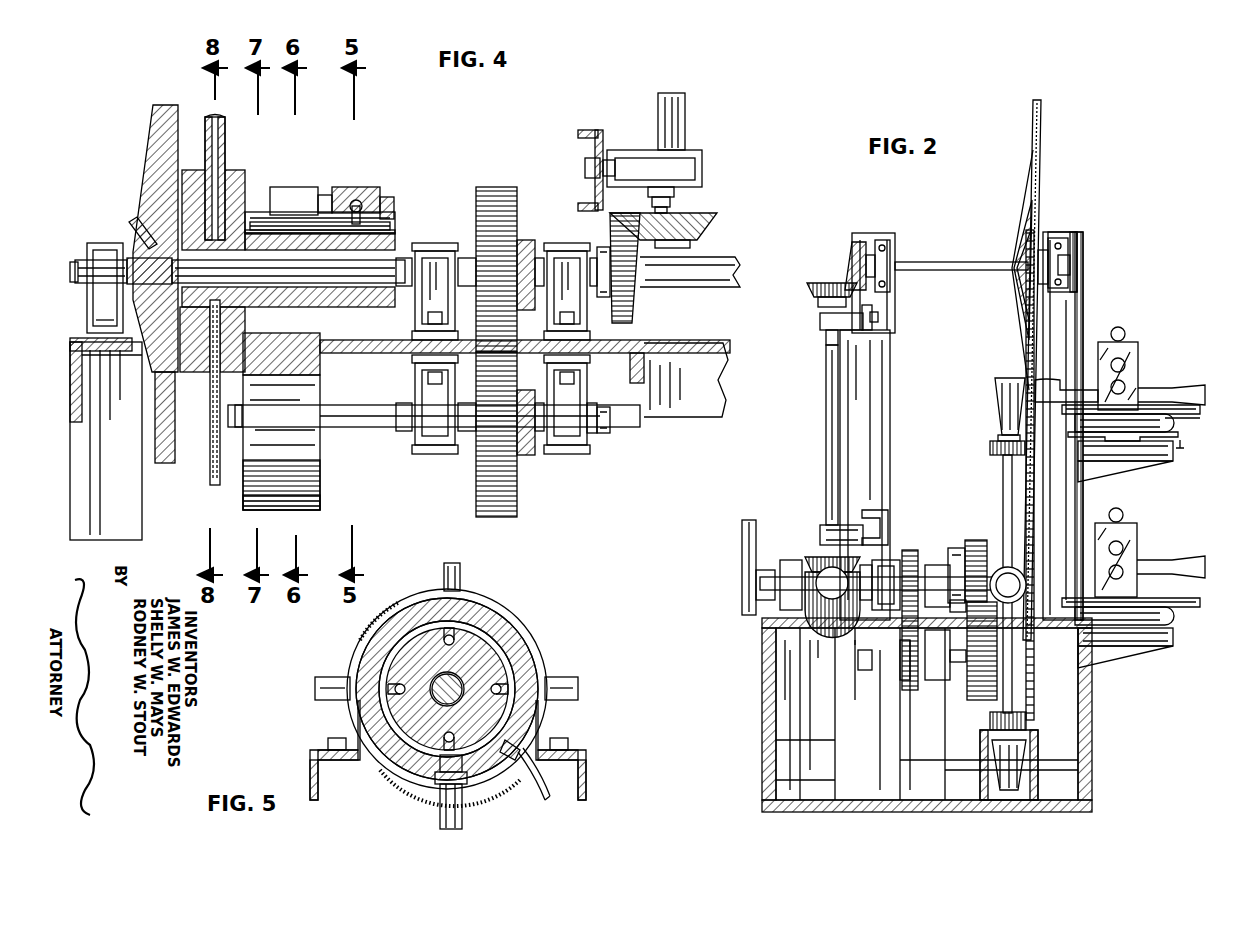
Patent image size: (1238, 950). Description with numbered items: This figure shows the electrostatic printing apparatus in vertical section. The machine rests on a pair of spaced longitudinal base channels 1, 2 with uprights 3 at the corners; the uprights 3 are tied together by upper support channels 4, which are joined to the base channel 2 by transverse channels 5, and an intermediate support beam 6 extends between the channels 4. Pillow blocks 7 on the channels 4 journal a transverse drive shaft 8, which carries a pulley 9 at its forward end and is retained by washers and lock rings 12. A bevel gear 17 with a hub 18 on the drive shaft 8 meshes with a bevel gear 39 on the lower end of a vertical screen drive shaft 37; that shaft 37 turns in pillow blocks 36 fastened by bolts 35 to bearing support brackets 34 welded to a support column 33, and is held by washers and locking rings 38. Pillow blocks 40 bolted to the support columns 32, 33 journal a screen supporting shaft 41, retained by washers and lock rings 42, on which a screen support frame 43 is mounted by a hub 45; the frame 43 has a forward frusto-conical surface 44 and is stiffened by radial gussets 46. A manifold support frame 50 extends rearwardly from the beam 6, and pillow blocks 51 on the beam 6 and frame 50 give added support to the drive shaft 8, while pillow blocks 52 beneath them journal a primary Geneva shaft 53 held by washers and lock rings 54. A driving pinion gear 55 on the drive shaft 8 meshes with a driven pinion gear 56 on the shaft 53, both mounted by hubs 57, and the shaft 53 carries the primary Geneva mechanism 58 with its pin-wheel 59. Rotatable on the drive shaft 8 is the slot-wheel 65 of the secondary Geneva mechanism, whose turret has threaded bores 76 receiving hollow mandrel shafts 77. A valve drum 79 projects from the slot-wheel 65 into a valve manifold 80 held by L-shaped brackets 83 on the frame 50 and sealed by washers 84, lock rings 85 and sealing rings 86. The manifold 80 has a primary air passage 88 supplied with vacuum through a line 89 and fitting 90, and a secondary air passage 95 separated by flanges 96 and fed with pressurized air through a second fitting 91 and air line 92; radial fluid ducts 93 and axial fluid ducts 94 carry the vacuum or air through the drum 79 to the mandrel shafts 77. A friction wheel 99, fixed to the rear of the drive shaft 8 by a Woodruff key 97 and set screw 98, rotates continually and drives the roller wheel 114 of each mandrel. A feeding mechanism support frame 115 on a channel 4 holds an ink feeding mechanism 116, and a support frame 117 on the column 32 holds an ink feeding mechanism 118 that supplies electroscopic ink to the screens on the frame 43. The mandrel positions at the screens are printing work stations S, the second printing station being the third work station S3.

In FIG. 2, the base channel 1 is at (1092, 806).
In FIG. 2, the base channel 2 is at (763, 790).
In FIG. 2, the upright 3 is at (1100, 698).
In FIG. 4, the support channel 4 is at (142, 515).
In FIG. 2, the transverse channel 5 is at (816, 645).
In FIG. 4, the intermediate support beam 6 is at (650, 340).
In FIG. 2, the intermediate support beam 6 is at (855, 630).
In FIG. 4, the pillow block 7 is at (117, 243).
In FIG. 4, the drive shaft 8 is at (738, 260).
In FIG. 2, the pulley 9 is at (744, 530).
In FIG. 4, the washers and lock rings 12 is at (75, 268).
In FIG. 2, the washers and lock rings 12 is at (770, 570).
In FIG. 4, the bevel gear 17 is at (636, 302).
In FIG. 2, the bevel gear 17 is at (866, 565).
In FIG. 4, the hub 18 is at (597, 247).
In FIG. 2, the hub 18 is at (890, 560).
In FIG. 2, the support column 32 is at (1083, 300).
In FIG. 2, the support column 33 is at (873, 233).
In FIG. 4, the bearing support bracket 34 is at (580, 128).
In FIG. 2, the bearing support bracket 34 is at (912, 498).
In FIG. 4, the bolt 35 is at (618, 160).
In FIG. 2, the bolt 35 is at (878, 318).
In FIG. 4, the pillow block 36 is at (700, 170).
In FIG. 2, the pillow block 36 is at (820, 525).
In FIG. 4, the screen drive shaft 37 is at (685, 105).
In FIG. 2, the screen drive shaft 37 is at (826, 442).
In FIG. 4, the washers and locking rings 38 is at (690, 148).
In FIG. 2, the washers and locking rings 38 is at (826, 340).
In FIG. 4, the bevel gear 39 is at (712, 218).
In FIG. 2, the bevel gear 39 is at (816, 557).
In FIG. 2, the pillow block 40 is at (1095, 262).
In FIG. 2, the screen supporting shaft 41 is at (972, 265).
In FIG. 2, the washers and lock rings 42 is at (1078, 255).
In FIG. 2, the screen support frame 43 is at (1043, 158).
In FIG. 2, the frusto-conical surface 44 is at (1032, 150).
In FIG. 2, the hub 45 is at (1040, 258).
In FIG. 2, the gusset 46 is at (1022, 210).
In FIG. 2, the manifold support frame 50 is at (958, 662).
In FIG. 4, the pillow block 51 is at (560, 243).
In FIG. 2, the pillow block 51 is at (928, 565).
In FIG. 4, the pillow block 52 is at (580, 480).
In FIG. 2, the pillow block 52 is at (935, 680).
In FIG. 4, the primary Geneva shaft 53 is at (610, 420).
In FIG. 2, the primary Geneva shaft 53 is at (858, 660).
In FIG. 4, the washers and lock rings 54 is at (400, 450).
In FIG. 4, the driving pinion gear 55 is at (497, 187).
In FIG. 2, the driving pinion gear 55 is at (918, 552).
In FIG. 4, the driven pinion gear 56 is at (517, 500).
In FIG. 2, the hub 57 is at (895, 680).
In FIG. 4, the primary Geneva mechanism 58 is at (322, 440).
In FIG. 2, the primary Geneva mechanism 58 is at (976, 540).
In FIG. 4, the pin-wheel 59 is at (243, 500).
In FIG. 2, the pin-wheel 59 is at (968, 700).
In FIG. 4, the slot-wheel 65 is at (278, 187).
In FIG. 4, the bore 76 is at (182, 170).
In FIG. 4, the mandrel shaft 77 is at (210, 470).
In FIG. 5, the mandrel shaft 77 is at (570, 675).
In FIG. 2, the mandrel shaft 77 is at (1003, 482).
In FIG. 5, the valve drum 79 is at (372, 628).
In FIG. 5, the valve manifold 80 is at (500, 640).
In FIG. 2, the valve manifold 80 is at (958, 548).
In FIG. 5, the L-shaped bracket 83 is at (568, 752).
In FIG. 4, the washer 84 is at (420, 182).
In FIG. 4, the lock ring 85 is at (395, 232).
In FIG. 4, the sealing ring 86 is at (386, 197).
In FIG. 4, the primary air passage 88 is at (352, 187).
In FIG. 5, the primary air passage 88 is at (425, 598).
In FIG. 5, the tube or line 89 is at (462, 812).
In FIG. 5, the fitting 90 is at (435, 790).
In FIG. 5, the second fitting 91 is at (510, 765).
In FIG. 5, the air line 92 is at (540, 795).
In FIG. 4, the radial fluid duct 93 is at (358, 200).
In FIG. 5, the radial fluid duct 93 is at (378, 680).
In FIG. 4, the axial fluid duct 94 is at (290, 212).
In FIG. 5, the axial fluid duct 94 is at (548, 625).
In FIG. 5, the secondary air passage 95 is at (500, 720).
In FIG. 5, the flange 96 is at (462, 765).
In FIG. 4, the Woodruff key 97 is at (150, 212).
In FIG. 4, the set screw 98 is at (130, 248).
In FIG. 4, the friction wheel 99 is at (156, 116).
In FIG. 2, the friction wheel 99 is at (1035, 505).
In FIG. 2, the roller wheel 114 is at (990, 448).
In FIG. 2, the feeding mechanism support frame 115 is at (1140, 660).
In FIG. 2, the ink feeding mechanism 116 is at (1145, 548).
In FIG. 2, the support frame 117 is at (1148, 457).
In FIG. 2, the ink feeding mechanism 118 is at (1143, 368).
In FIG. 2, the work station S is at (990, 385).
In FIG. 2, the third work station S3 is at (1045, 750).